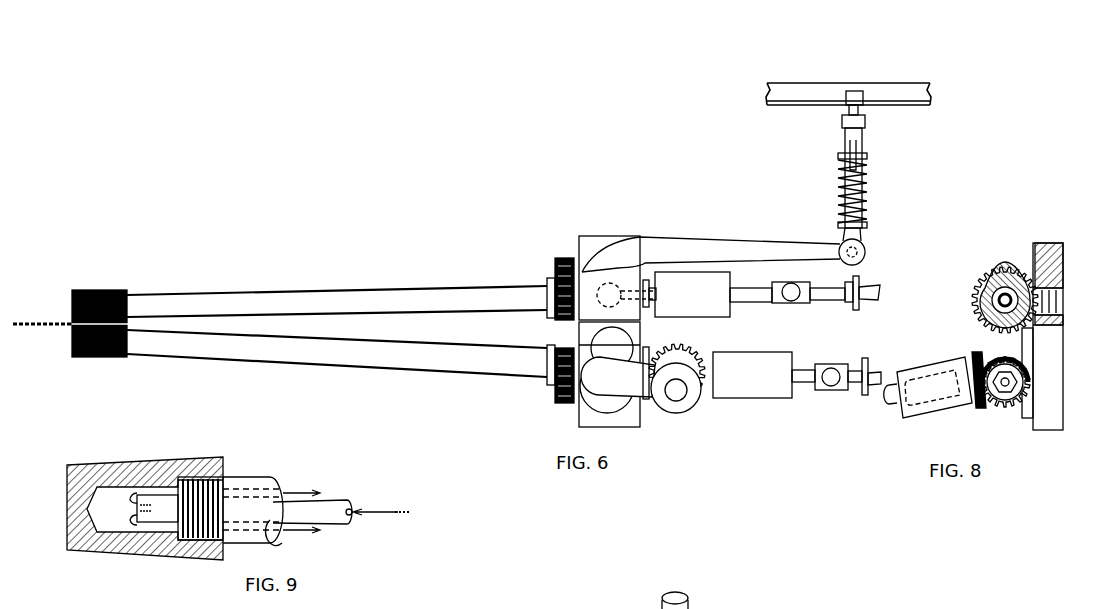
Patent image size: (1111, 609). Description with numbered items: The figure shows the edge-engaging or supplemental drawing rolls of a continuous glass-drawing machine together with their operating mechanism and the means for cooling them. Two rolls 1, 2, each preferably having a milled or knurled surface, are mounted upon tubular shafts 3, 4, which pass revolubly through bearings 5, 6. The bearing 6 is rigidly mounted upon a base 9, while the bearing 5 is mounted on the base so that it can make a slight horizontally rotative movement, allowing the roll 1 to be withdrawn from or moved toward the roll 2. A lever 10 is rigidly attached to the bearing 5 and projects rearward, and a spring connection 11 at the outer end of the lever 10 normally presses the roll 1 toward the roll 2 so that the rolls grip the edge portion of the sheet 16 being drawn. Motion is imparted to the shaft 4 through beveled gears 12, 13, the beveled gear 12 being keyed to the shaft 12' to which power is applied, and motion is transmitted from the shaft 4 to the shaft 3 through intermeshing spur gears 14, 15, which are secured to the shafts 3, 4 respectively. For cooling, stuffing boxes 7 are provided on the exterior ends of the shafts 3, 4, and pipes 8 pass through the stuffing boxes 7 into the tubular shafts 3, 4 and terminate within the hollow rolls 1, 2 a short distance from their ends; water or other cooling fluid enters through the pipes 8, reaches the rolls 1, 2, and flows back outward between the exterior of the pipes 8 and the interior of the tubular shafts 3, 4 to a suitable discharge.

In FIG. 6, the roll 1 is at (110, 272).
In FIG. 6, the roll 2 is at (108, 358).
In FIG. 6, the tubular shaft 3 is at (322, 300).
In FIG. 6, the tubular shaft 4 is at (328, 353).
In FIG. 9, the tubular shaft 4 is at (258, 477).
In FIG. 6, the bearing 5 is at (596, 267).
In FIG. 6, the bearing 6 is at (580, 410).
In FIG. 6, the stuffing box 7 is at (733, 304).
In FIG. 6, the pipe 8 is at (860, 364).
In FIG. 8, the pipe 8 is at (987, 435).
In FIG. 9, the pipe 8 is at (330, 509).
In FIG. 6, the base 9 is at (620, 237).
In FIG. 8, the base 9 is at (1045, 224).
In FIG. 6, the lever 10 is at (743, 238).
In FIG. 6, the spring connection 11 is at (838, 182).
In FIG. 6, the beveled gear 12 is at (723, 361).
In FIG. 8, the beveled gear 12 is at (934, 376).
In FIG. 6, the shaft 12' is at (701, 593).
In FIG. 8, the shaft 12' is at (875, 412).
In FIG. 6, the beveled gear 13 is at (665, 322).
In FIG. 8, the beveled gear 13 is at (1059, 336).
In FIG. 6, the spur gear 14 is at (520, 255).
In FIG. 8, the spur gear 14 is at (987, 295).
In FIG. 6, the spur gear 15 is at (540, 379).
In FIG. 8, the spur gear 15 is at (976, 359).
In FIG. 6, the sheet 16 is at (38, 338).